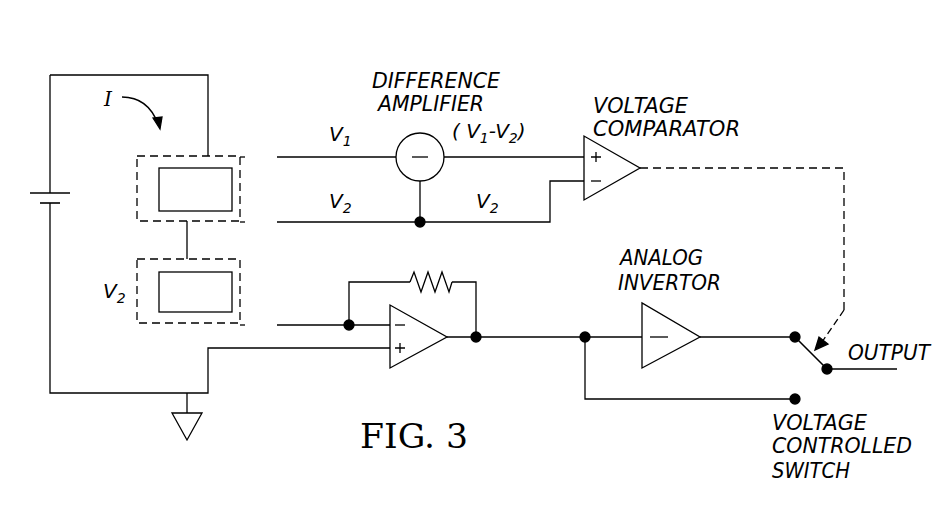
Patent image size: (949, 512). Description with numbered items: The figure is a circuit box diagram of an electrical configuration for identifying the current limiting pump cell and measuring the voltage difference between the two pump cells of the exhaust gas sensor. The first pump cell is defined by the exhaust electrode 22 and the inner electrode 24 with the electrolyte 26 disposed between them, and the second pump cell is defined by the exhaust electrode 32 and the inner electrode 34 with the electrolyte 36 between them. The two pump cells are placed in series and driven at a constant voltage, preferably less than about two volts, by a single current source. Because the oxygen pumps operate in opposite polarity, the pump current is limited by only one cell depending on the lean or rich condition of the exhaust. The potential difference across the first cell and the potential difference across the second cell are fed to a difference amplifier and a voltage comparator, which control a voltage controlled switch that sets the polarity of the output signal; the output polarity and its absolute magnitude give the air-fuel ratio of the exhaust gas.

The electrode 22 is at (318, 157).
The electrode 24 is at (412, 209).
The electrolyte 26 is at (195, 189).
The electrode 32 is at (315, 325).
The electrode 34 is at (232, 249).
The electrolyte 36 is at (195, 292).